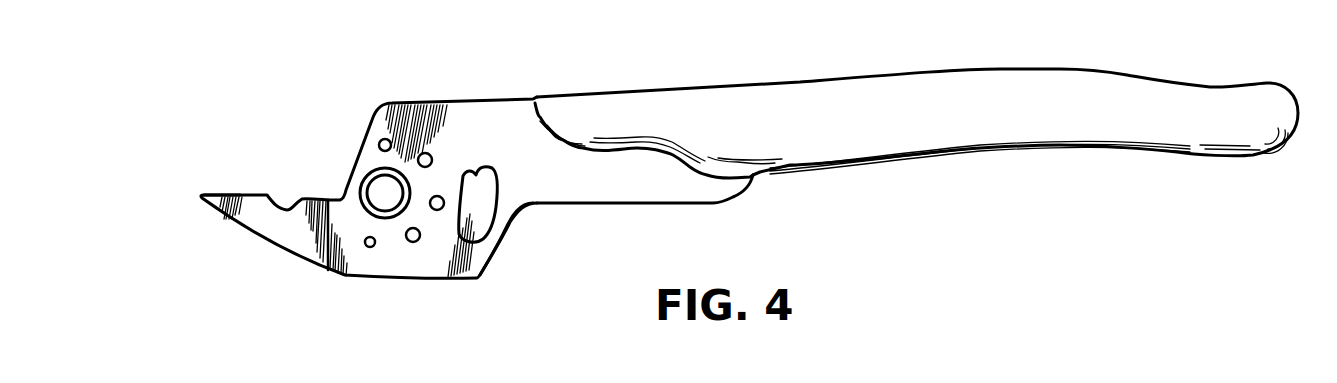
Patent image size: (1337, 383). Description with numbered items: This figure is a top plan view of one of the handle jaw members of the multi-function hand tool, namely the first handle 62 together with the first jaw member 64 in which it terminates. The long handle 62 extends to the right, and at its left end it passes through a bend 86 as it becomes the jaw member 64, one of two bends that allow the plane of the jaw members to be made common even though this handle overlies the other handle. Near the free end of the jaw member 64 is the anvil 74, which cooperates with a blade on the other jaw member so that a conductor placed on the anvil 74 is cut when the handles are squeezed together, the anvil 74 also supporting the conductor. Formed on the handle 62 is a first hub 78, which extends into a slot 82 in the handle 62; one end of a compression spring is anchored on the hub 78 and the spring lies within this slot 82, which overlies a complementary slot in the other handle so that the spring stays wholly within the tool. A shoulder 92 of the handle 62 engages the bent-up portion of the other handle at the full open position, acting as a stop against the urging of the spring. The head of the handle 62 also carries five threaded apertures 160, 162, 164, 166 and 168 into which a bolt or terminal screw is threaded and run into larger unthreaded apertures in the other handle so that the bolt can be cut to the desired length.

The first handle 62 is at (1013, 100).
The first jaw member 64 is at (263, 222).
The anvil 74 is at (228, 193).
The first hub 78 is at (479, 170).
The slot 82 is at (493, 268).
The bend 86 is at (327, 237).
The shoulder 92 is at (360, 152).
The threaded aperture 160 is at (370, 248).
The threaded aperture 162 is at (417, 243).
The threaded aperture 164 is at (437, 211).
The threaded aperture 166 is at (426, 152).
The threaded aperture 168 is at (386, 138).